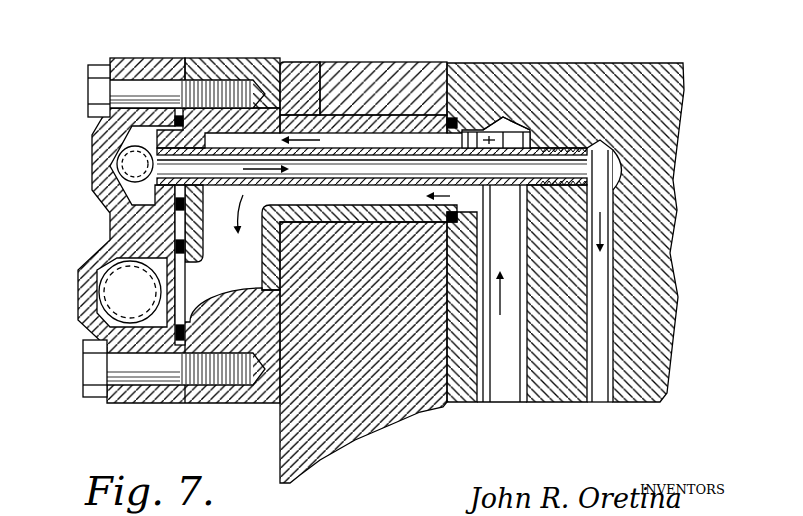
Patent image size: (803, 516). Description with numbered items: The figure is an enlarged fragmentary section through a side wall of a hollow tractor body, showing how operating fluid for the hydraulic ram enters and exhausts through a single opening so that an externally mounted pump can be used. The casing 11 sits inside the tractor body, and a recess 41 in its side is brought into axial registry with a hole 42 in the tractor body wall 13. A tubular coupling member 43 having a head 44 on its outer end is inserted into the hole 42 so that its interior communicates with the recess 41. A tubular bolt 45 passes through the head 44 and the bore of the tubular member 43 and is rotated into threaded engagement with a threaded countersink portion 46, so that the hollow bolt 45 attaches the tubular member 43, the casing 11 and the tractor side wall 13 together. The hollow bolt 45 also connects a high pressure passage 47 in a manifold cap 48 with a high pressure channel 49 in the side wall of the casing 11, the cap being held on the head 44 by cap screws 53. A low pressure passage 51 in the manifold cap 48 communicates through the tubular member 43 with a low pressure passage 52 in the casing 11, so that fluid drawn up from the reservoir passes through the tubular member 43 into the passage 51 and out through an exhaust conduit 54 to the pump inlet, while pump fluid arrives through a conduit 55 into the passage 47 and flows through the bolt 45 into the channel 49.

The casing 11 is at (545, 65).
The side wall portion of the tractor body 13 is at (393, 65).
The recess 41 is at (467, 133).
The hole 42 is at (413, 115).
The tubular coupling member 43 is at (308, 132).
The head 44 is at (240, 63).
The tubular bolt 45 is at (338, 149).
The threaded countersink portion 46 is at (562, 146).
The high pressure passage 47 is at (92, 140).
The manifold cap 48 is at (135, 60).
The high pressure channel 49 is at (610, 223).
The low pressure passage 51 is at (168, 260).
The low pressure passage 52 is at (515, 383).
The cap screws 53 is at (88, 92).
The exhaust conduit 54 is at (93, 312).
The conduit 55 is at (92, 178).